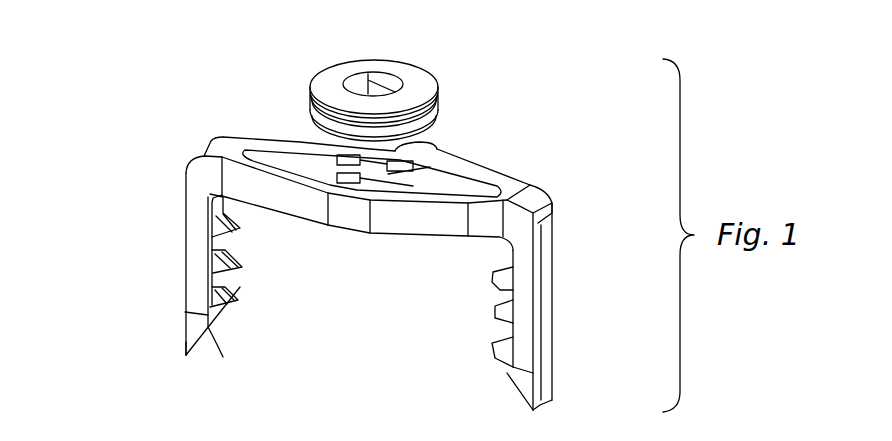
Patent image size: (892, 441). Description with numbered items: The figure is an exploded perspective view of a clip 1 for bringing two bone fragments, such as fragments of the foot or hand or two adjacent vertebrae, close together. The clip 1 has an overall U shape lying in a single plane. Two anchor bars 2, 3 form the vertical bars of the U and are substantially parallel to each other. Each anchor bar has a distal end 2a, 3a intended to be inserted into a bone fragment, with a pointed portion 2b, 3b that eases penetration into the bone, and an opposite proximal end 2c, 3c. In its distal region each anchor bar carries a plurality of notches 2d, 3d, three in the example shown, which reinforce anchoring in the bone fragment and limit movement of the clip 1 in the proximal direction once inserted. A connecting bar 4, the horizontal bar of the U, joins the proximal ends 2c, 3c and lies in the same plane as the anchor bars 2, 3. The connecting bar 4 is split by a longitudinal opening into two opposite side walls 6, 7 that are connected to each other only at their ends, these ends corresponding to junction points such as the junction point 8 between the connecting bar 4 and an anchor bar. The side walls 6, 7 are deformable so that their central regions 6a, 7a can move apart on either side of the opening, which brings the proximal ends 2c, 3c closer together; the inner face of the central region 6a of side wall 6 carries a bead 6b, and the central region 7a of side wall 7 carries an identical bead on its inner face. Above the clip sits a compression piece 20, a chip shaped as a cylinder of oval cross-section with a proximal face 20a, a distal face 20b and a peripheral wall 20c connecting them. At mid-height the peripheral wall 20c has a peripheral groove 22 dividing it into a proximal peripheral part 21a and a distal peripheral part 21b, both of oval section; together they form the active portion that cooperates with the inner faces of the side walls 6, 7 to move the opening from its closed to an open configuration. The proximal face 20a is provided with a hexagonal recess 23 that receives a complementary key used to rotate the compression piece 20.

The clip 1 is at (138, 62).
The anchor bar 2 is at (184, 245).
The distal end 2a is at (180, 361).
The pointed portion 2b is at (208, 330).
The proximal end 2c is at (182, 163).
The notches 2d is at (240, 262).
The anchor bar 3 is at (553, 307).
The distal end 3a is at (547, 414).
The pointed portion 3b is at (509, 382).
The proximal end 3c is at (554, 198).
The notches 3d is at (500, 310).
The connecting bar 4 is at (400, 262).
The side wall 6 is at (268, 147).
The central region 6a is at (400, 145).
The bead 6b is at (400, 165).
The side wall 7 is at (318, 232).
The central region 7a is at (357, 233).
The junction point 8 is at (240, 440).
The compression piece 20 is at (298, 62).
The proximal face 20a is at (338, 62).
The distal face 20b is at (305, 125).
The peripheral wall 20c is at (442, 107).
The proximal peripheral part 21a is at (441, 87).
The distal peripheral part 21b is at (442, 127).
The peripheral groove 22 is at (318, 103).
The recess 23 is at (383, 80).